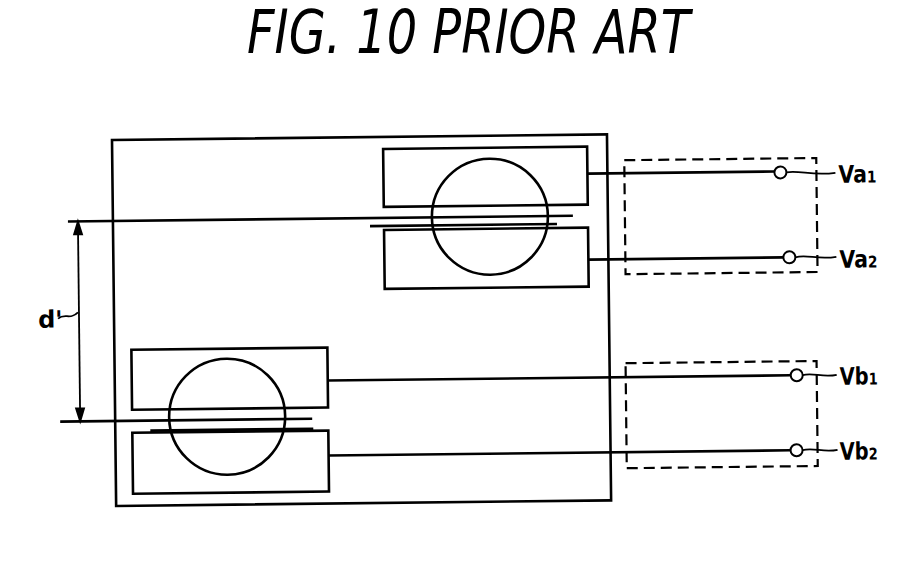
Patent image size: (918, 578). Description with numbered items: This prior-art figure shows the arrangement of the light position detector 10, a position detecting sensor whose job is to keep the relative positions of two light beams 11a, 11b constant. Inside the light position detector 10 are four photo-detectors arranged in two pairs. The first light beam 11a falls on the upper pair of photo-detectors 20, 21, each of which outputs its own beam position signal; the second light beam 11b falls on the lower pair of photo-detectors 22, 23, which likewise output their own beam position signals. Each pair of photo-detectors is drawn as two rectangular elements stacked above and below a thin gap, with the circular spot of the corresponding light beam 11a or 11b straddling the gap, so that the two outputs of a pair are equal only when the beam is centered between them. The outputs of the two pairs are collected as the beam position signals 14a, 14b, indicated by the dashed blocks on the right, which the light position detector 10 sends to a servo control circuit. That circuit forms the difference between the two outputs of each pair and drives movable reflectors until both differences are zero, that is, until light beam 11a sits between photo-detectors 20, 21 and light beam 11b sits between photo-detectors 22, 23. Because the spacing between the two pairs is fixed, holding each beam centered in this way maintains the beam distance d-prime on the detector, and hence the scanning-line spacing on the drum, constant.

The light position detector 10 is at (425, 140).
The light beam 11a is at (509, 163).
The light beam 11b is at (224, 476).
The photo-detector 20 is at (383, 171).
The photo-detector 21 is at (383, 254).
The photo-detector 22 is at (325, 355).
The photo-detector 23 is at (325, 438).
The beam position signal 14a is at (666, 166).
The beam position signal 14b is at (686, 474).